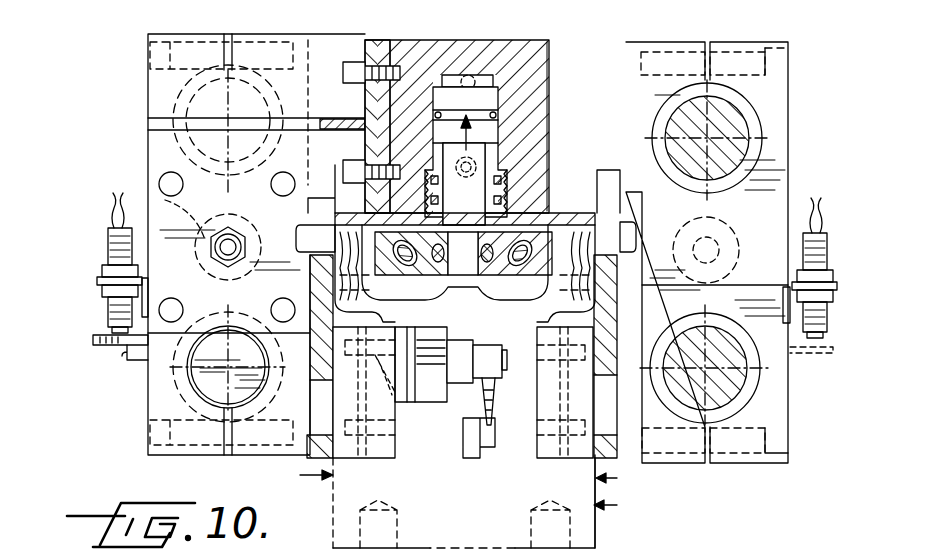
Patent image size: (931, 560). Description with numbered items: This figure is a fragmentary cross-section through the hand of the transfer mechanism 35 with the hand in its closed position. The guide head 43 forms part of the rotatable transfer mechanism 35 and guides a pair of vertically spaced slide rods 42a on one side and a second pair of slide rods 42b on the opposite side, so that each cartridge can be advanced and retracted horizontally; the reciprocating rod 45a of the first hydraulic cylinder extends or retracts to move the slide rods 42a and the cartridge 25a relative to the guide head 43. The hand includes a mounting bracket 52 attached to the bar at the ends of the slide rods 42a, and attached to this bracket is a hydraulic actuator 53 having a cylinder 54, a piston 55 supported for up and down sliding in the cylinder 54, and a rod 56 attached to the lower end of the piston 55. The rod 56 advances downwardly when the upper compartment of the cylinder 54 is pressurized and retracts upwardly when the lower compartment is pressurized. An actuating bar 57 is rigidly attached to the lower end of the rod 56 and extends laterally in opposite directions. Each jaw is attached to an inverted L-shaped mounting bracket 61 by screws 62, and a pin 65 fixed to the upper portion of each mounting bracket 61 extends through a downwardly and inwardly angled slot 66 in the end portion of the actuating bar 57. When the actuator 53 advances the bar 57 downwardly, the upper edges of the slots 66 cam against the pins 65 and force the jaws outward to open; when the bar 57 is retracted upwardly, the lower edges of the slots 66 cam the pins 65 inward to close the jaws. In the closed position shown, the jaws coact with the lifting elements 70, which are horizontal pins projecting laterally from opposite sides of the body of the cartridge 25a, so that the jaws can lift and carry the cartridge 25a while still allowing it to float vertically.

The transfer mechanism 35 is at (146, 88).
The guide head 43 is at (788, 180).
The slide rods 42a is at (148, 128).
The slide rods 42b is at (740, 117).
The reciprocating rod 45a is at (165, 200).
The mounting bracket 52 is at (332, 47).
The hydraulic actuator 53 is at (549, 70).
The cylinder 54 is at (545, 115).
The piston 55 is at (485, 85).
The rod 56 is at (478, 212).
The actuating bar 57 is at (520, 250).
The mounting bracket 61 is at (410, 298).
The screws 62 is at (398, 402).
The pin 65 is at (395, 240).
The angled slot 66 is at (445, 287).
The lifting elements 70 is at (303, 219).
The cartridge 25a is at (596, 503).